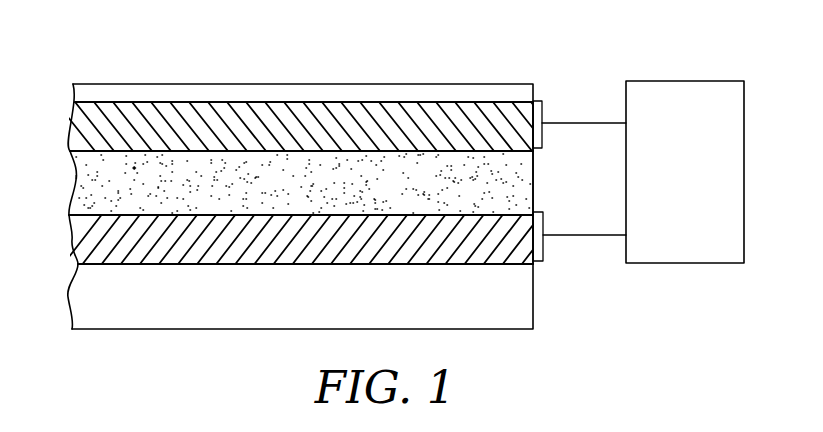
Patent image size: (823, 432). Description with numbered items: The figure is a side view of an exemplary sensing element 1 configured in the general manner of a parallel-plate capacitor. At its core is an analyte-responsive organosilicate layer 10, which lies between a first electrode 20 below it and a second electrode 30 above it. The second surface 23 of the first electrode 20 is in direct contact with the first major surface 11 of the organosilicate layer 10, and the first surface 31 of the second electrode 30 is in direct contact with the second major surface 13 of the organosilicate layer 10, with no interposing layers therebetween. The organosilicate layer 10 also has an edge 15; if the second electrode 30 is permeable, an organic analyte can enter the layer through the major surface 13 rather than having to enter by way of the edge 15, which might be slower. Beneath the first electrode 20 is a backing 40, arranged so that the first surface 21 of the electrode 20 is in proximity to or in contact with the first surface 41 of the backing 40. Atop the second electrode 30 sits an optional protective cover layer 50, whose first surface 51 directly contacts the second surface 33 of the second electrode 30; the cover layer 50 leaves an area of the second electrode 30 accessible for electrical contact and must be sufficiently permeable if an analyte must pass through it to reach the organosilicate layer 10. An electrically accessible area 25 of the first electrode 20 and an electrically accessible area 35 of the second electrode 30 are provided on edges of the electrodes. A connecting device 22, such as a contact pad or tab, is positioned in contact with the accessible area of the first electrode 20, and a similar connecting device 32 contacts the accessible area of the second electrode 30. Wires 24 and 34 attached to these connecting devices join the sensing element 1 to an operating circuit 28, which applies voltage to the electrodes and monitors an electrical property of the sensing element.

The sensing element 1 is at (72, 34).
The analyte-responsive organosilicate layer 10 is at (78, 172).
The first major surface 11 is at (124, 214).
The second major surface 13 is at (187, 158).
The edge 15 is at (536, 169).
The first electrode 20 is at (78, 240).
The first surface 21 is at (258, 264).
The connecting device 22 is at (539, 252).
The second surface 23 is at (152, 216).
The wire 24 is at (602, 234).
The electrically accessible area 25 is at (523, 262).
The operating circuit 28 is at (683, 90).
The second electrode 30 is at (75, 127).
The first surface 31 is at (141, 150).
The connecting device 32 is at (543, 106).
The second surface 33 is at (338, 108).
The wire 34 is at (601, 121).
The electrically accessible area 35 is at (532, 121).
The backing 40 is at (80, 297).
The first surface 41 is at (279, 266).
The cover layer 50 is at (80, 93).
The first surface 51 is at (302, 100).